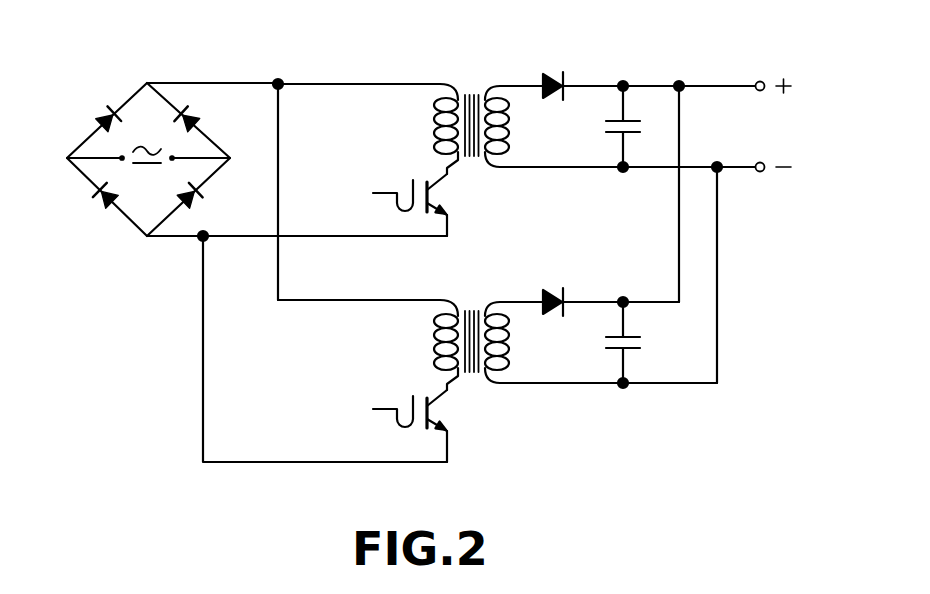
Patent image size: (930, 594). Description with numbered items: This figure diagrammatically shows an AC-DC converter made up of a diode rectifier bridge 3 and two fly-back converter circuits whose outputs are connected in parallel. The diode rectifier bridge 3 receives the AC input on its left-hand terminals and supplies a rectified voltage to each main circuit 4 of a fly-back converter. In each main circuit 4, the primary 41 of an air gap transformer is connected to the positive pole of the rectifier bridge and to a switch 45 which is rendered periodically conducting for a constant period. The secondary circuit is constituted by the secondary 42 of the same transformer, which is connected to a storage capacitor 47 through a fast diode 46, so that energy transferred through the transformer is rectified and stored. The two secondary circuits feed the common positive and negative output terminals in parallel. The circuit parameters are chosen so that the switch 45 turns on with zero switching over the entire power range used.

The diode rectifier bridge 3 is at (118, 222).
The main circuit of the fly-back converter 4 is at (512, 178).
The primary of the air gap transformer 41 is at (433, 122).
The secondary of the air gap transformer 42 is at (507, 133).
The switch 45 is at (445, 192).
The fast diode 46 is at (553, 77).
The storage capacitor 47 is at (633, 126).